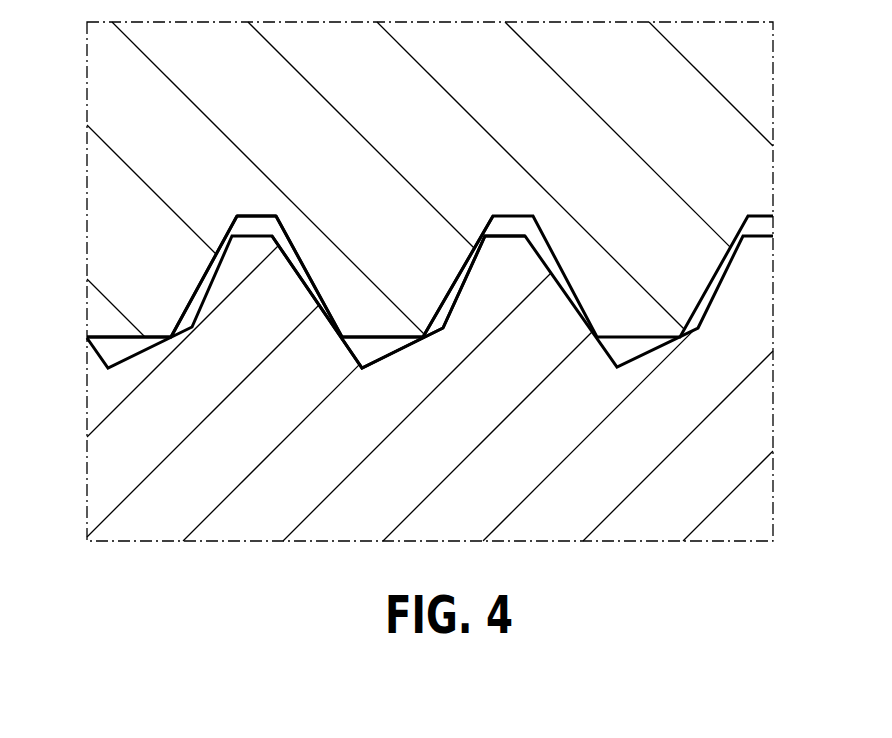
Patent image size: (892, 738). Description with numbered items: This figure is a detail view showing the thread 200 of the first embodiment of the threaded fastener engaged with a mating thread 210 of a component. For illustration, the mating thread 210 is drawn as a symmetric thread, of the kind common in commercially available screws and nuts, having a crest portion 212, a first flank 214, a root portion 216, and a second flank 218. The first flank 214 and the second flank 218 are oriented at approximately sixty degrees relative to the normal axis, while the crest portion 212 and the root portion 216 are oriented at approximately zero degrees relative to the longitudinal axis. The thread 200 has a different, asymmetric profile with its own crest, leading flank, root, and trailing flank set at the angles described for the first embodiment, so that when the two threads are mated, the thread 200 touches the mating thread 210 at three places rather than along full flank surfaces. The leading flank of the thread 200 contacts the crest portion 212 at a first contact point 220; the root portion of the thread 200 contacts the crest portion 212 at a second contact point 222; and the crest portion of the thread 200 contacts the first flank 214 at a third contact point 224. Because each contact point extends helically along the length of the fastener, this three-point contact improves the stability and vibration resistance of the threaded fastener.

The thread 200 is at (740, 505).
The mating thread 210 is at (452, 122).
The crest portion 212 is at (130, 337).
The first flank 214 is at (202, 280).
The root portion 216 is at (262, 216).
The second flank 218 is at (295, 248).
The first contact point 220 is at (342, 345).
The second contact point 222 is at (423, 340).
The third contact point 224 is at (486, 235).